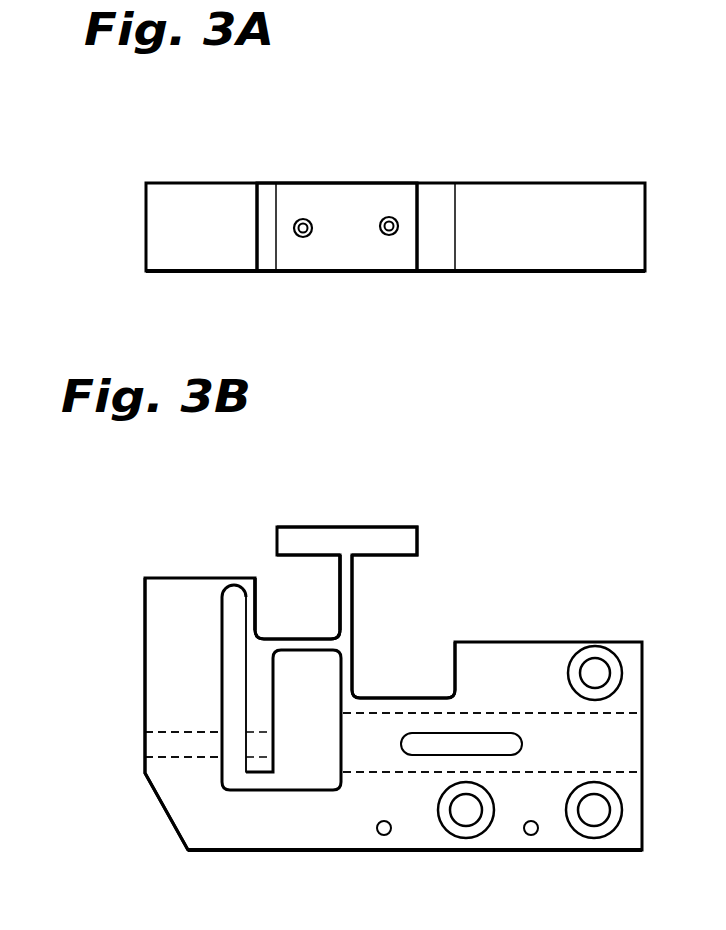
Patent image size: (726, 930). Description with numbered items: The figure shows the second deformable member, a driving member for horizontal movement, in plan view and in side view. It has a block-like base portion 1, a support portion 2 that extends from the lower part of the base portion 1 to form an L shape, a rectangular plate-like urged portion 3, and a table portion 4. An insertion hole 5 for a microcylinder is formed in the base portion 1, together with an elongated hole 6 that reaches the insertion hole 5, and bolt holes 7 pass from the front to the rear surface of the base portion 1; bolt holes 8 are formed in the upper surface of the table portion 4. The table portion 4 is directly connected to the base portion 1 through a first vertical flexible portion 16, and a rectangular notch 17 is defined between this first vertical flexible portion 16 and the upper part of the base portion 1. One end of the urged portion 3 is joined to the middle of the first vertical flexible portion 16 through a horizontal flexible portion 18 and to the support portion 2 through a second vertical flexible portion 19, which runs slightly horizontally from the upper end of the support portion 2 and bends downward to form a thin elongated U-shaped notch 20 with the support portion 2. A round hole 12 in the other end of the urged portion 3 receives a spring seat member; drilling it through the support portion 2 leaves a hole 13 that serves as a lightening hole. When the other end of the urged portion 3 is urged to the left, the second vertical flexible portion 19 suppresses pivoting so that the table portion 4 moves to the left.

In FIG. 3A, the base portion 1 is at (527, 200).
In FIG. 3B, the base portion 1 is at (511, 655).
In FIG. 3B, the support portion 2 is at (157, 640).
In FIG. 3B, the urged portion 3 is at (260, 697).
In FIG. 3A, the table portion 4 is at (319, 197).
In FIG. 3B, the table portion 4 is at (349, 545).
In FIG. 3B, the insertion hole 5 is at (622, 752).
In FIG. 3B, the elongated hole 6 is at (440, 748).
In FIG. 3B, the bolt holes 7 is at (596, 672).
In FIG. 3A, the bolt holes 8 is at (388, 215).
In FIG. 3B, the round hole 12 is at (257, 742).
In FIG. 3B, the hole 13 is at (160, 740).
In FIG. 3B, the first vertical flexible portion 16 is at (348, 605).
In FIG. 3B, the rectangular notch 17 is at (412, 687).
In FIG. 3B, the horizontal flexible portion 18 is at (302, 647).
In FIG. 3B, the second vertical flexible portion 19 is at (259, 612).
In FIG. 3B, the U-shaped notch 20 is at (232, 612).